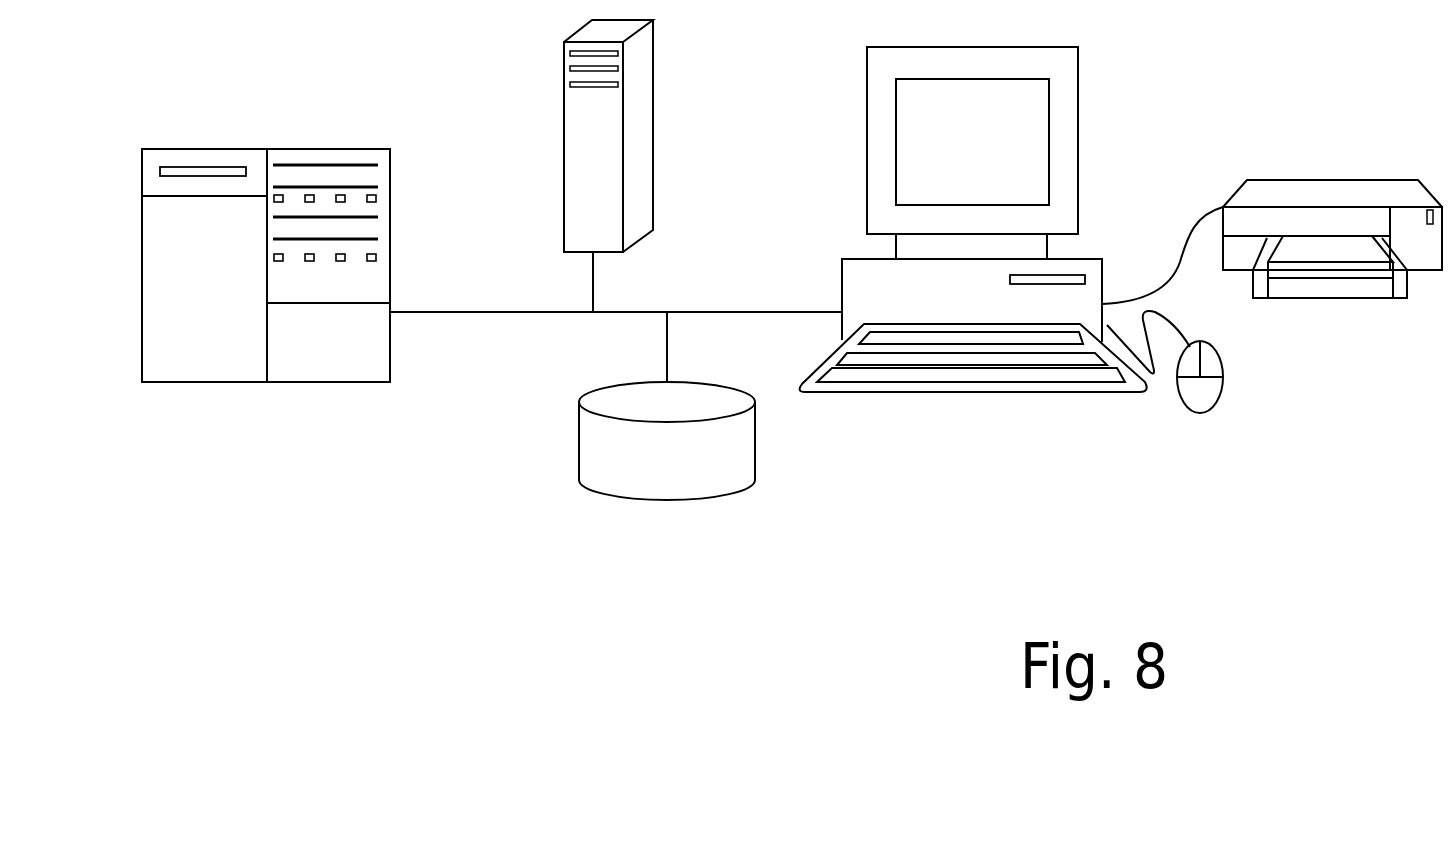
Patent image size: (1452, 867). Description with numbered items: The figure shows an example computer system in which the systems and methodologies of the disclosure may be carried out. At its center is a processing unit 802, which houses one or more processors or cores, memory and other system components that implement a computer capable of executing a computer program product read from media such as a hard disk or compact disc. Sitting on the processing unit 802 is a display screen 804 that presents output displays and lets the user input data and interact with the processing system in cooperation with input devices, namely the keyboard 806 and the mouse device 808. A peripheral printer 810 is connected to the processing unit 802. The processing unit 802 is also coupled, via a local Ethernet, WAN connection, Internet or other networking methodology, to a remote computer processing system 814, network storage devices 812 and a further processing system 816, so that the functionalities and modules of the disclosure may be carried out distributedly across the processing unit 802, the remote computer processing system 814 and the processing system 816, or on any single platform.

The processing unit 802 is at (847, 288).
The display screen 804 is at (1078, 160).
The keyboard 806 is at (1040, 397).
The mouse device 808 is at (1223, 396).
The printer 810 is at (1330, 180).
The network storage devices 812 is at (690, 500).
The remote computer processing system 814 is at (653, 123).
The processing system 816 is at (320, 149).